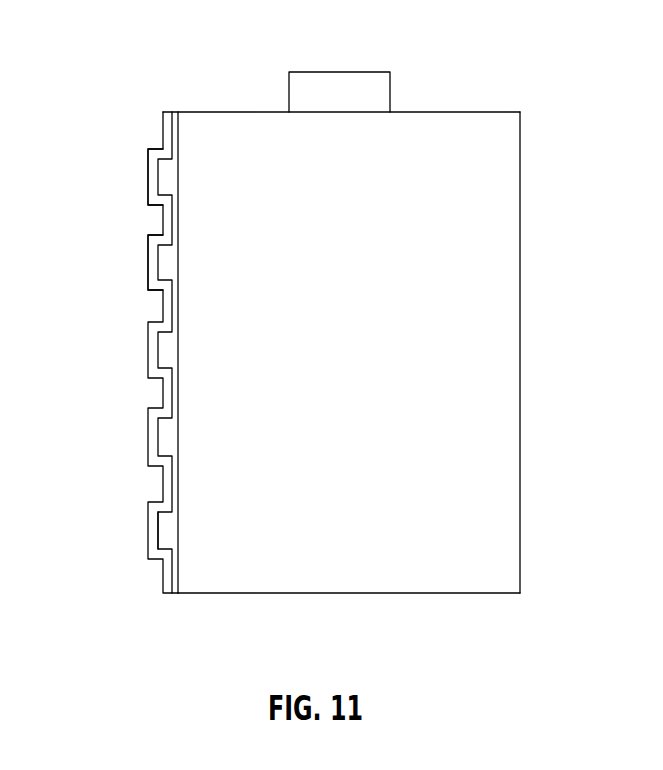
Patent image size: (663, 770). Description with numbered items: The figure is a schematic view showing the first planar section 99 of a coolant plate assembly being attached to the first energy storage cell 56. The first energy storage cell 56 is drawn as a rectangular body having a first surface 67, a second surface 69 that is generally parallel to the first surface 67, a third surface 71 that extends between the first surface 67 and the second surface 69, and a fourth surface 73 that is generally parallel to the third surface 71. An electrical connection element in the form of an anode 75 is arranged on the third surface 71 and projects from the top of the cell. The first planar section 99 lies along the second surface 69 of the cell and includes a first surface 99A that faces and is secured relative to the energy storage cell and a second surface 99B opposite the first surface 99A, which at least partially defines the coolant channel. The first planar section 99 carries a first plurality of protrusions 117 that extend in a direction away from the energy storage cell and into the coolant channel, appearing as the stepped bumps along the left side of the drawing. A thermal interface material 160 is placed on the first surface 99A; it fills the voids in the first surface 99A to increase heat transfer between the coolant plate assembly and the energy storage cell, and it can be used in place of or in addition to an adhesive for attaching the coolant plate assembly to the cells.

The first energy storage cell 56 is at (351, 341).
The first surface 67 is at (520, 252).
The second surface 69 is at (175, 577).
The third surface 71 is at (445, 112).
The fourth surface 73 is at (408, 594).
The anode 75 is at (340, 90).
The first planar section 99 is at (161, 352).
The first surface 99A is at (163, 305).
The second surface 99B is at (172, 128).
The first plurality of protrusions 117 is at (148, 182).
The thermal interface material 160 is at (168, 530).